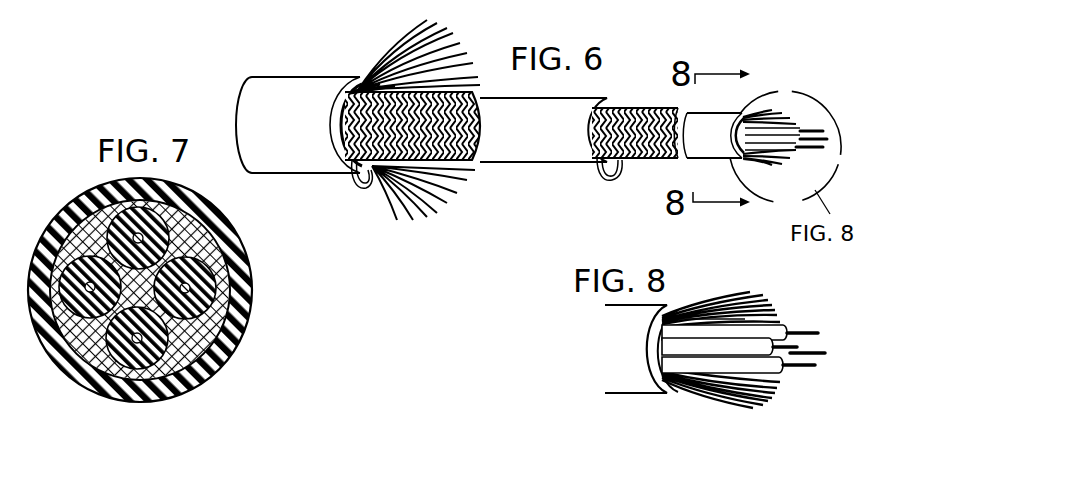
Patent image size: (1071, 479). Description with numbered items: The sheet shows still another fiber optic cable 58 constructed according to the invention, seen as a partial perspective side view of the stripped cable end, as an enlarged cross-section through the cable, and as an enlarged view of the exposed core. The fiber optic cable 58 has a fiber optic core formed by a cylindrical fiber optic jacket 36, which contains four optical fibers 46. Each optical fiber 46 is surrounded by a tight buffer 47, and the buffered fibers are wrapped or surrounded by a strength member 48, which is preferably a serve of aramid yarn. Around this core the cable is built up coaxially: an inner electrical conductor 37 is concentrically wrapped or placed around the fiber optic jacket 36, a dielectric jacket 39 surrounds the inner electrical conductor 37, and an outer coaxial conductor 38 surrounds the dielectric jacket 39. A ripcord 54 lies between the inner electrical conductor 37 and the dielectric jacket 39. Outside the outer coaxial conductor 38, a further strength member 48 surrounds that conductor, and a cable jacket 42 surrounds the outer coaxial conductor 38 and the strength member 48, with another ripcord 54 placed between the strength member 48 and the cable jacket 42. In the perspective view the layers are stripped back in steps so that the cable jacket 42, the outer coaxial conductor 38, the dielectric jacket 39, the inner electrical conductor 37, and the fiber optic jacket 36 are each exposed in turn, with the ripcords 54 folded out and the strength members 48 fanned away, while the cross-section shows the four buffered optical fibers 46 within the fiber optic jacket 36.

In FIG. 6, the fiber optic jacket 36 is at (735, 110).
In FIG. 7, the fiber optic jacket 36 is at (207, 199).
In FIG. 6, the inner electrical conductor 37 is at (632, 108).
In FIG. 6, the outer coaxial conductor 38 is at (476, 162).
In FIG. 6, the dielectric jacket 39 is at (543, 164).
In FIG. 6, the cable jacket 42 is at (270, 76).
In FIG. 7, the optical fiber 46 is at (213, 302).
In FIG. 8, the optical fiber 46 is at (807, 371).
In FIG. 6, the tight buffer 47 is at (786, 139).
In FIG. 7, the tight buffer 47 is at (213, 268).
In FIG. 8, the tight buffer 47 is at (784, 325).
In FIG. 6, the strength member 48 is at (393, 62).
In FIG. 7, the strength member 48 is at (200, 244).
In FIG. 8, the strength member 48 is at (742, 397).
In FIG. 6, the ripcord 54 is at (370, 185).
In FIG. 6, the fiber optic cable 58 is at (225, 123).